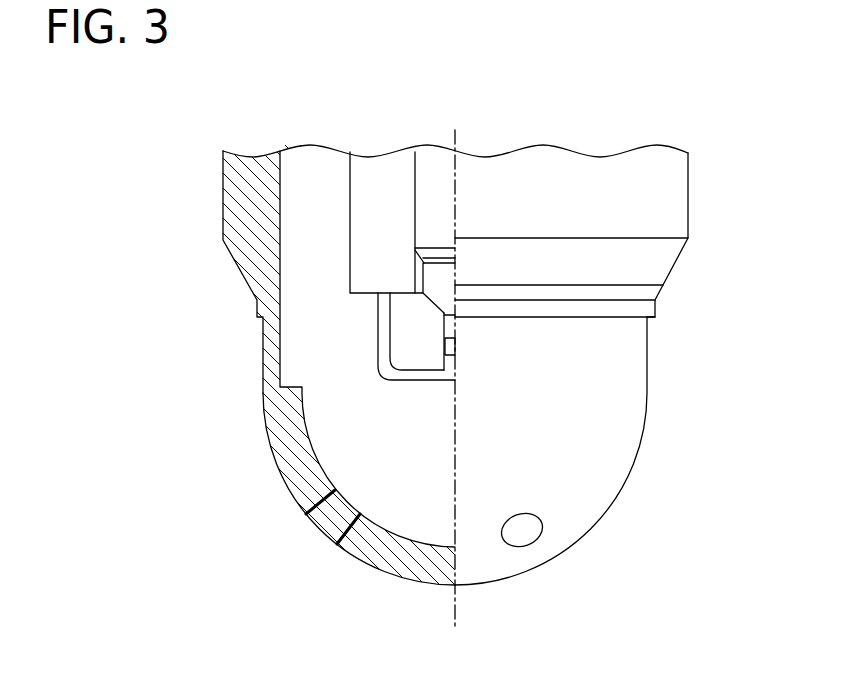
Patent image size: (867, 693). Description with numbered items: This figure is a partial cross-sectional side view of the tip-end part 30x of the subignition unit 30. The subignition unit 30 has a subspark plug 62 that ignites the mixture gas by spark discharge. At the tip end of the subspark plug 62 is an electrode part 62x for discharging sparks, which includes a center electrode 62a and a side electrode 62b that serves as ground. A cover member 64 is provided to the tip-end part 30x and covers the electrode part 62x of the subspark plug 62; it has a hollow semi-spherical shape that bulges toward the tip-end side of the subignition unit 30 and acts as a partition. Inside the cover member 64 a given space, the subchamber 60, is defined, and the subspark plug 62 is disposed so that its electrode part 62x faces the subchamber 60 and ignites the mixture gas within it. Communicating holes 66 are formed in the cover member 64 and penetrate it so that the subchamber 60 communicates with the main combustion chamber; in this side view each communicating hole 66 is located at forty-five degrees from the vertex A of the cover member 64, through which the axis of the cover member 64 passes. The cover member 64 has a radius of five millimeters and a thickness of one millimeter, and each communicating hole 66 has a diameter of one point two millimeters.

The subignition unit 30 is at (607, 314).
The tip-end part 30x is at (674, 129).
The subchamber 60 is at (317, 412).
The subspark plug 62 is at (432, 141).
The center electrode 62a is at (448, 378).
The side electrode 62b is at (400, 381).
The electrode part 62x is at (399, 392).
The cover member 64 is at (377, 567).
The communicating holes 66 is at (320, 507).
The vertex A is at (453, 588).